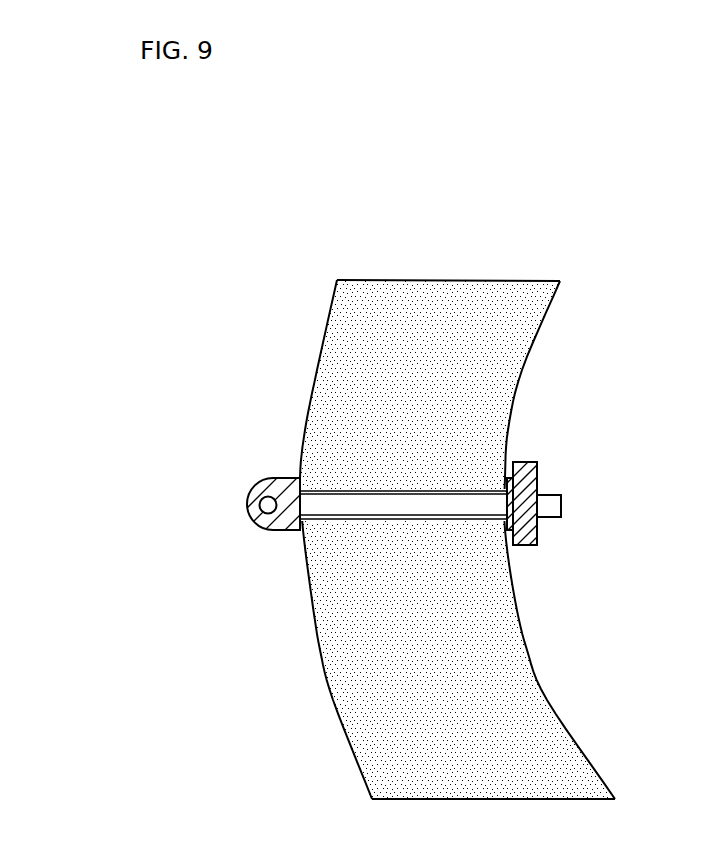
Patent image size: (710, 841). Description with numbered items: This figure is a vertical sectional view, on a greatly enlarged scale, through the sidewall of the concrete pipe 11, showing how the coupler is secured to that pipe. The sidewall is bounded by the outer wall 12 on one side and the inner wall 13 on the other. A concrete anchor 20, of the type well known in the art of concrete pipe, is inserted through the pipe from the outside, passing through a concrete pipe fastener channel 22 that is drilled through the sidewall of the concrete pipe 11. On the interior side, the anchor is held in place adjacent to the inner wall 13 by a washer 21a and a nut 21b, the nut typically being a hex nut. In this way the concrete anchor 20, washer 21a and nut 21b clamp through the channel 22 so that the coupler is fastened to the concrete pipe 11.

The concrete pipe 11 is at (440, 288).
The outer wall 12 is at (310, 327).
The inner wall 13 is at (534, 360).
The concrete anchor 20 is at (266, 456).
The concrete pipe fastener channel 22 is at (318, 471).
The washer 21a is at (523, 563).
The nut 21b is at (554, 552).